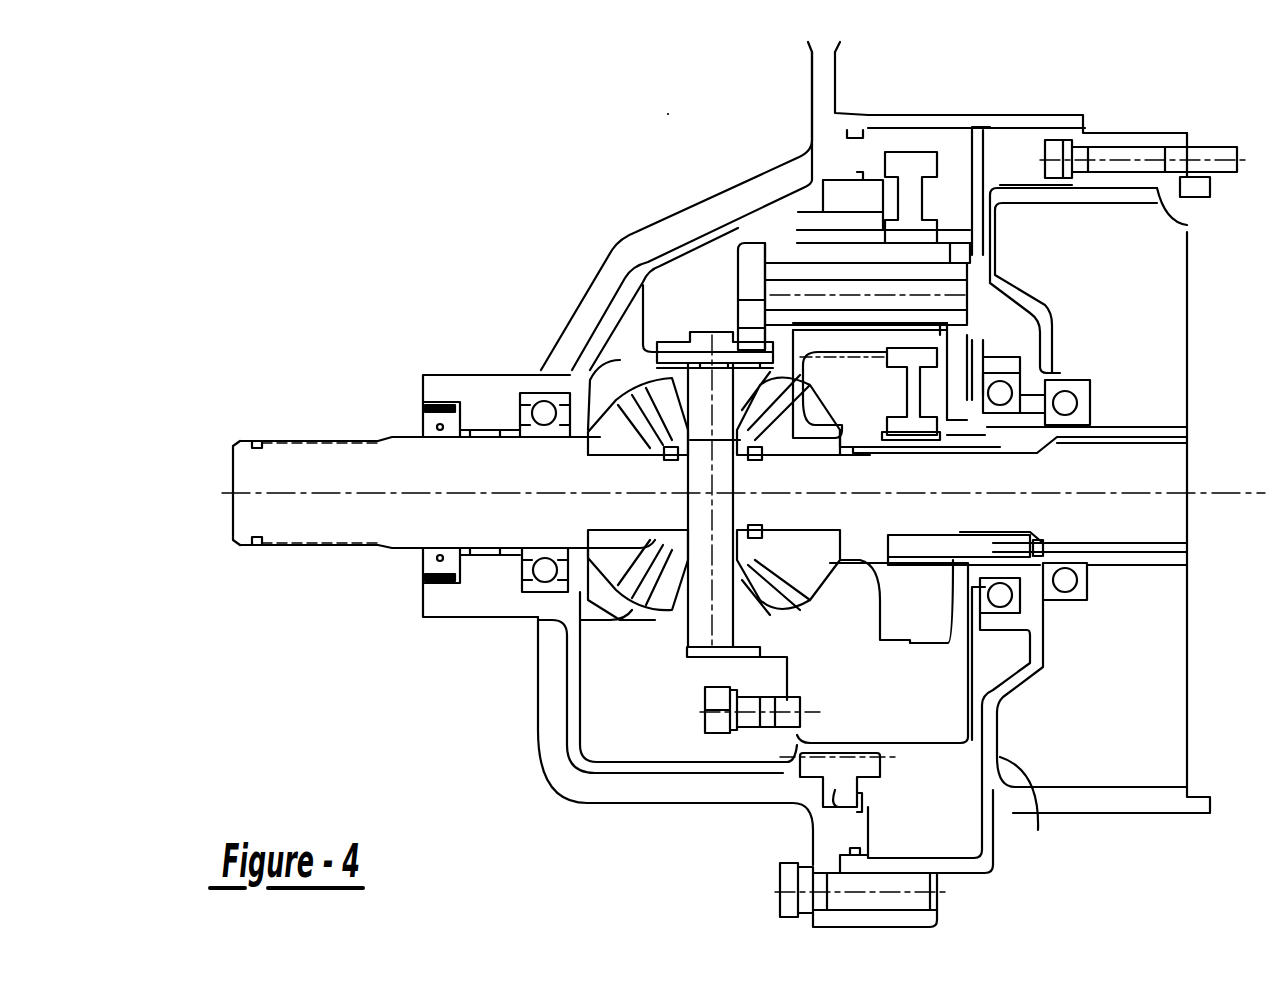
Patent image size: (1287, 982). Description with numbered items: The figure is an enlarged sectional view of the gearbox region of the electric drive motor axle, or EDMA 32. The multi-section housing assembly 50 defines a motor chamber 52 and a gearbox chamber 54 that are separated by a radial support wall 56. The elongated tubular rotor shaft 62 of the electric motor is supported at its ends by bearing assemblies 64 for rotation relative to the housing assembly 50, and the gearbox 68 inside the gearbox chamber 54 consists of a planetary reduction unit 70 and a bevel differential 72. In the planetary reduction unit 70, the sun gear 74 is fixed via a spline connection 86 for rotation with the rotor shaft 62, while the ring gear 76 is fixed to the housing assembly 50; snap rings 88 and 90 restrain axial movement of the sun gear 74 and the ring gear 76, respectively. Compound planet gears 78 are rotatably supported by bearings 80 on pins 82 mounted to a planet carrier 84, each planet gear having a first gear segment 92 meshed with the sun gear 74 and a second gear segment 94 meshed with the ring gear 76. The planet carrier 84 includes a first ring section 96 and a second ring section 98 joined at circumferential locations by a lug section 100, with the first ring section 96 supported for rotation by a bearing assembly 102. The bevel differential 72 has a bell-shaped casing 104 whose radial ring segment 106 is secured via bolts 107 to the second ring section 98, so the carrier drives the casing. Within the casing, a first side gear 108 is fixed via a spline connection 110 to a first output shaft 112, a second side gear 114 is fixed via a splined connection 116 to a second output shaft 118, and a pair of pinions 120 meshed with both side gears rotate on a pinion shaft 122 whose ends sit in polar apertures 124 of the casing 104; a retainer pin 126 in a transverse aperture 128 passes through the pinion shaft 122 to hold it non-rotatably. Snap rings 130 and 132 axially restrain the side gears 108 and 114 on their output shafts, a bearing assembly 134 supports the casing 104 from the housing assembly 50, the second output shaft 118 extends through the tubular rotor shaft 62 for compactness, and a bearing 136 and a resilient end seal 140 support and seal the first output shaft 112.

The electric drive motor axle (EDMA) 32 is at (668, 110).
The multi-section housing assembly 50 is at (1160, 118).
The motor chamber 52 is at (1190, 225).
The gearbox chamber 54 is at (640, 280).
The radial support wall 56 is at (1025, 760).
The elongated tubular rotor shaft 62 is at (1185, 428).
The bearing assemblies 64 is at (1075, 385).
The gearbox 68 is at (698, 270).
The planetary reduction unit 70 is at (1015, 325).
The bevel differential 72 is at (610, 688).
The sun gear 74 is at (905, 457).
The ring gear 76 is at (839, 840).
The compound planet gears 78 is at (960, 250).
The bearings 80 is at (930, 242).
The pins 82 is at (960, 283).
The planet carrier 84 is at (975, 668).
The spline connection 86 is at (1034, 533).
The snap ring 88 is at (1050, 548).
The snap ring 90 is at (864, 800).
The first gear segment 92 is at (908, 393).
The second gear segment 94 is at (843, 350).
The first ring section 96 is at (955, 255).
The second ring section 98 is at (780, 250).
The lug section 100 is at (937, 700).
The bearing assembly 102 is at (1020, 375).
The bell-shaped casing 104 is at (620, 686).
The radial ring segment 106 is at (762, 674).
The bolts 107 is at (715, 737).
The first side gear 108 is at (628, 588).
The spline connection 110 is at (606, 455).
The first output shaft 112 is at (289, 530).
The second side gear 114 is at (800, 565).
The splined connection 116 is at (805, 455).
The second output shaft 118 is at (1170, 475).
The pinions 120 is at (655, 382).
The pinion shaft 122 is at (690, 470).
The polar apertures 124 is at (706, 340).
The retainer pin 126 is at (730, 345).
The transverse aperture 128 is at (640, 350).
The snap ring 130 is at (622, 527).
The snap ring 132 is at (760, 468).
The bearing assembly 134 is at (545, 600).
The bearing 136 is at (480, 440).
The resilient end seal 140 is at (425, 430).